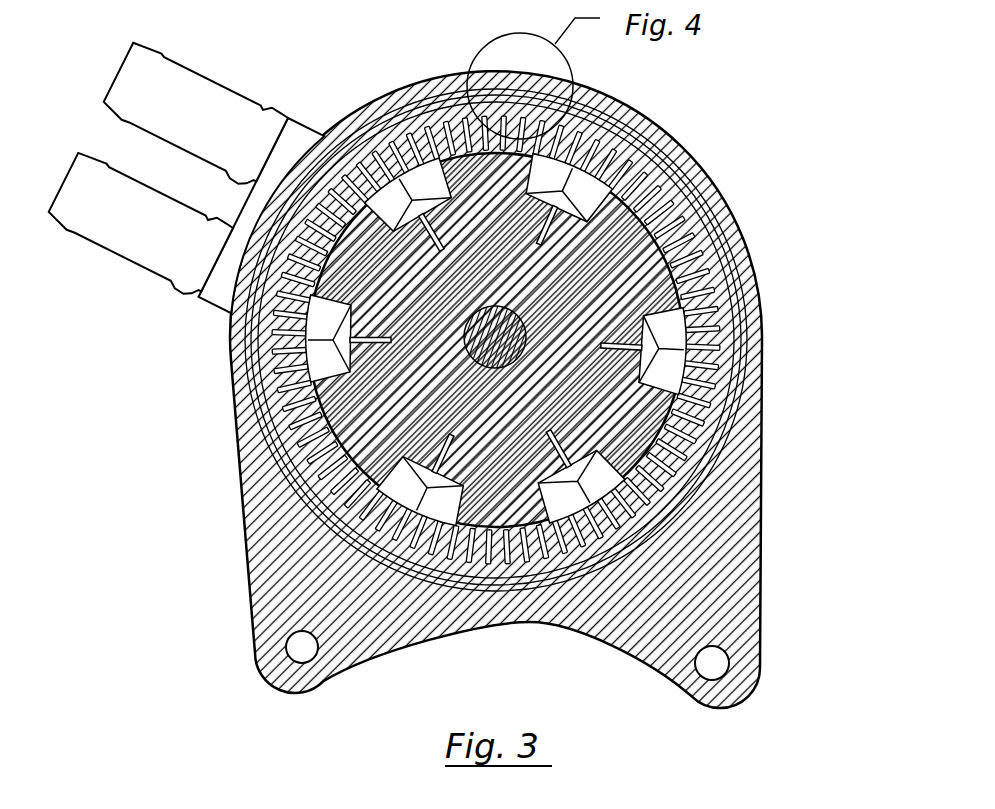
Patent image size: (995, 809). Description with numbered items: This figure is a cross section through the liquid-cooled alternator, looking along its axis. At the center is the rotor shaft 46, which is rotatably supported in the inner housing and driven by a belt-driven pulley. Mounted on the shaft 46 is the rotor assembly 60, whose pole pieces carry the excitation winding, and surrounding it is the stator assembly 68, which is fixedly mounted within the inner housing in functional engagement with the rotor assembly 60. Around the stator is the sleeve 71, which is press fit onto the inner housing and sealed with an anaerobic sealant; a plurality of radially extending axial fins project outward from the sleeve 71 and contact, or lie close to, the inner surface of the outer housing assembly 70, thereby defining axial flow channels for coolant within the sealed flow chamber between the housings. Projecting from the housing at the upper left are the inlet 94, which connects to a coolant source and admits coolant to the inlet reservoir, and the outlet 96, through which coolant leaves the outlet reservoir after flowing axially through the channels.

The rotor shaft 46 is at (473, 342).
The rotor assembly 60 is at (630, 400).
The stator assembly 68 is at (727, 355).
The outer housing assembly 70 is at (760, 296).
The sleeve 71 is at (740, 234).
The inlet 94 is at (155, 250).
The outlet 96 is at (220, 110).